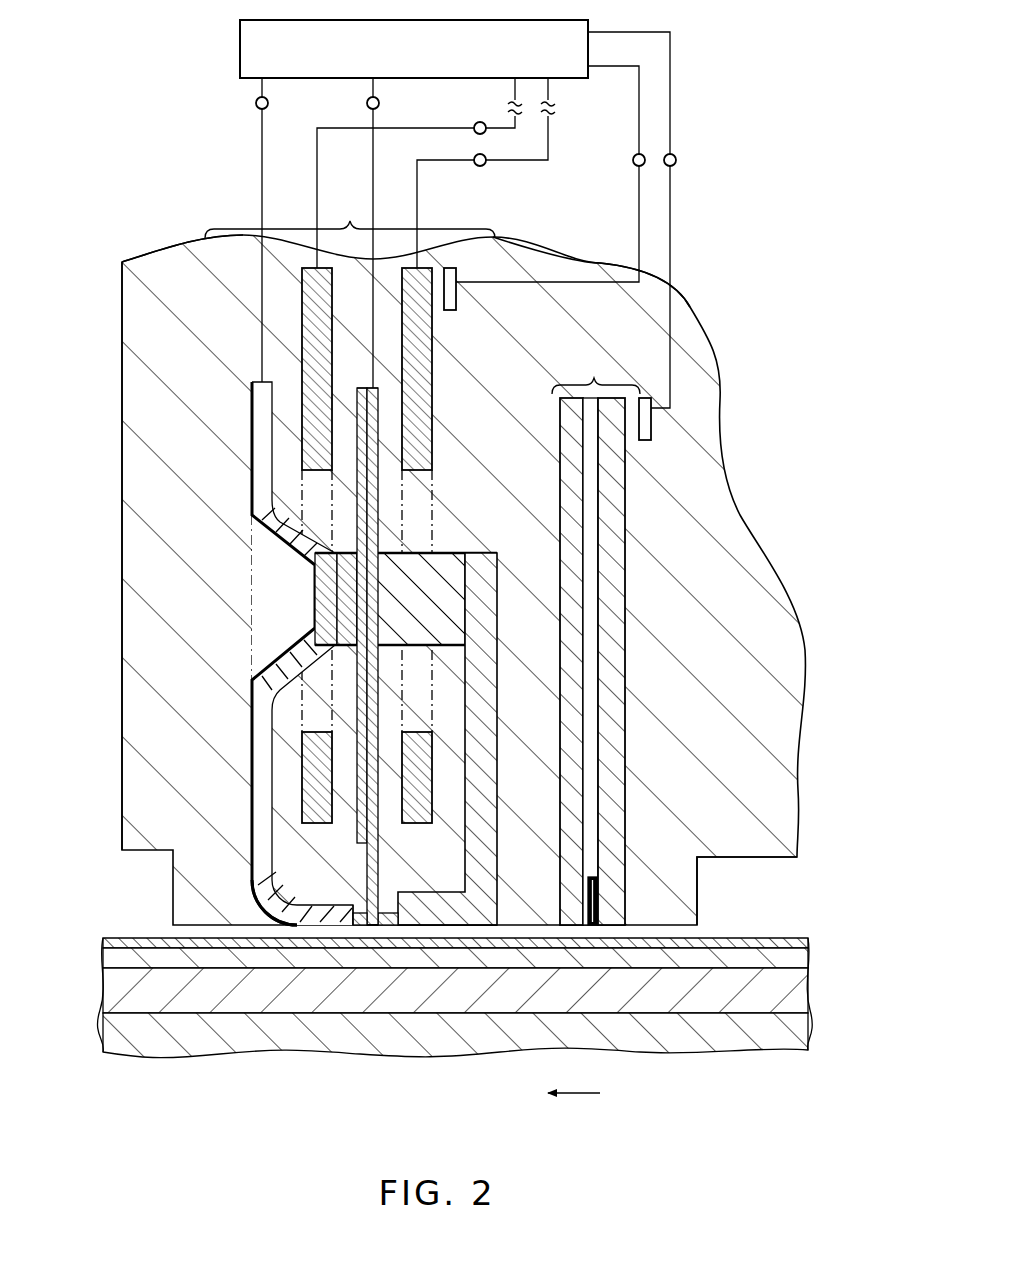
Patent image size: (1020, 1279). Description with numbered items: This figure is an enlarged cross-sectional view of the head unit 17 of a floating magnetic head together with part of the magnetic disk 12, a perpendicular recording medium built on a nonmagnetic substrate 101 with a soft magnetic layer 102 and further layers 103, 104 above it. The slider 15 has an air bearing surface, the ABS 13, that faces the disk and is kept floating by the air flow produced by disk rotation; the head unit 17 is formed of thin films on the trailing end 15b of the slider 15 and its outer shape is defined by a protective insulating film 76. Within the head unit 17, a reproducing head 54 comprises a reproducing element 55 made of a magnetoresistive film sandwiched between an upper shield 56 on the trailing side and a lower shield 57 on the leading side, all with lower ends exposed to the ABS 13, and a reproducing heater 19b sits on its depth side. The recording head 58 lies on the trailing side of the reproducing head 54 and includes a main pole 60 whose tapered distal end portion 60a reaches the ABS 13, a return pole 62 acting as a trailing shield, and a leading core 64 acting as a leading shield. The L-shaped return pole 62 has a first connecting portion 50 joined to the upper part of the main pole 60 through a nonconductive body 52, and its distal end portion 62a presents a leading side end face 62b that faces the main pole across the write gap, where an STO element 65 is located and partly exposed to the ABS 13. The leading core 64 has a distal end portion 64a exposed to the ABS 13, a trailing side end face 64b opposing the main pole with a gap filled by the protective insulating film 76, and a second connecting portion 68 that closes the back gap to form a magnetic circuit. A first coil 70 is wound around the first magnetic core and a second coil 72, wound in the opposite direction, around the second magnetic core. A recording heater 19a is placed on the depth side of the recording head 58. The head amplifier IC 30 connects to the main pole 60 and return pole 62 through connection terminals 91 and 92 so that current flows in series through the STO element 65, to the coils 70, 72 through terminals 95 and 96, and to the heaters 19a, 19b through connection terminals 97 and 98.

The magnetic disk 12 is at (422, 1033).
The ABS (air bearing surface) 13 is at (726, 858).
The slider 15 is at (703, 375).
The trailing end 15b is at (121, 478).
The head unit 17 is at (599, 271).
The recording heater 19a is at (456, 300).
The reproducing heater 19b is at (651, 436).
The head amplifier IC 30 is at (239, 45).
The first connecting portion 50 is at (327, 598).
The nonconductive body 52 is at (342, 578).
The reproducing head 54 is at (596, 369).
The reproducing element 55 is at (598, 888).
The upper shield 56 is at (612, 600).
The lower shield 57 is at (574, 556).
The recording head 58 is at (350, 212).
The main pole 60 is at (373, 826).
The distal end portion 60a is at (373, 928).
The return pole 62 is at (250, 706).
The distal end portion 62a is at (300, 922).
The leading side end face 62b is at (357, 912).
The leading core 64 is at (500, 647).
The distal end portion 64a is at (458, 922).
The trailing side end face 64b is at (397, 908).
The STO element 65 is at (357, 925).
The second connecting portion 68 is at (444, 562).
The first coil 70 is at (316, 310).
The second coil 72 is at (419, 380).
The protective insulating film 76 is at (148, 272).
The connection terminal 91 is at (367, 103).
The connection terminal 92 is at (256, 103).
The terminal 95 is at (474, 124).
The terminal 96 is at (485, 166).
The connection terminal 97 is at (633, 160).
The connection terminal 98 is at (676, 160).
The substrate 101 is at (101, 1035).
The soft magnetic layer 102 is at (101, 990).
The magnetic recording layer 103 is at (101, 957).
The protective layer 104 is at (101, 942).